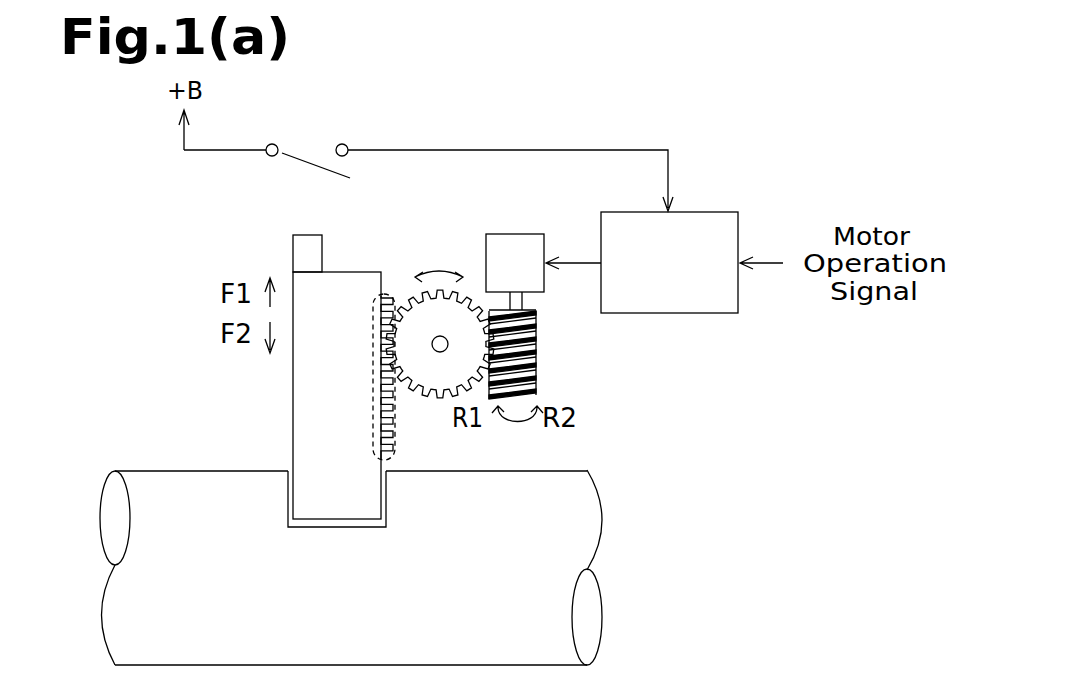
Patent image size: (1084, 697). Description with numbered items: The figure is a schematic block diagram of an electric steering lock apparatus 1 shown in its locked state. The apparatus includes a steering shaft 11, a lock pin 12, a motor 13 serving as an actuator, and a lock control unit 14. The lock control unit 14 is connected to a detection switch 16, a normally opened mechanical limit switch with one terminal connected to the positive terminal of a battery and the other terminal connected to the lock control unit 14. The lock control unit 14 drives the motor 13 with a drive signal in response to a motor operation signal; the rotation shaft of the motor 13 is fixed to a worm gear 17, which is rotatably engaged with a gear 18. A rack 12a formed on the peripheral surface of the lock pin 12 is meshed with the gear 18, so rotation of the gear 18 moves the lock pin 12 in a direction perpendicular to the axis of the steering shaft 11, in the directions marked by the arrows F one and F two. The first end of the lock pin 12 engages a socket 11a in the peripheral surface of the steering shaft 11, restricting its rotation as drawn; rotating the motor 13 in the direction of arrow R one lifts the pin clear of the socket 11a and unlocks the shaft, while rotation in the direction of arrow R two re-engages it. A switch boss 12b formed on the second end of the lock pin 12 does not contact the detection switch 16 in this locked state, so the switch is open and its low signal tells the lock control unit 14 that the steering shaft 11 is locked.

The electric steering lock apparatus 1 is at (131, 265).
The steering shaft 11 is at (587, 509).
The socket 11a is at (342, 521).
The lock pin 12 is at (293, 402).
The rack 12a is at (394, 292).
The switch boss 12b is at (293, 250).
The motor 13 is at (530, 234).
The lock control unit 14 is at (713, 212).
The detection switch 16 is at (298, 160).
The worm gear 17 is at (538, 330).
The gear 18 is at (422, 377).